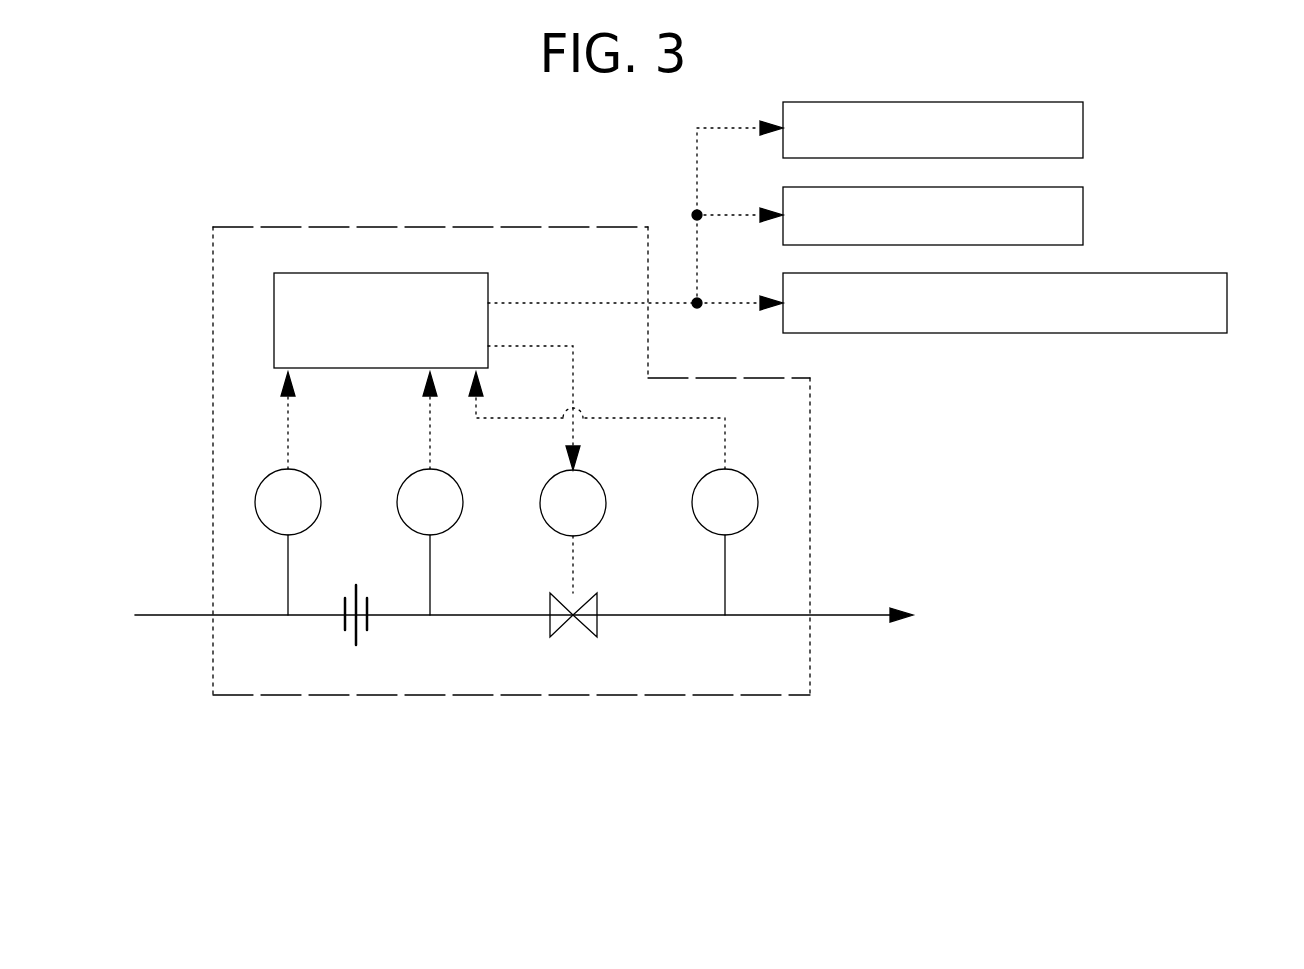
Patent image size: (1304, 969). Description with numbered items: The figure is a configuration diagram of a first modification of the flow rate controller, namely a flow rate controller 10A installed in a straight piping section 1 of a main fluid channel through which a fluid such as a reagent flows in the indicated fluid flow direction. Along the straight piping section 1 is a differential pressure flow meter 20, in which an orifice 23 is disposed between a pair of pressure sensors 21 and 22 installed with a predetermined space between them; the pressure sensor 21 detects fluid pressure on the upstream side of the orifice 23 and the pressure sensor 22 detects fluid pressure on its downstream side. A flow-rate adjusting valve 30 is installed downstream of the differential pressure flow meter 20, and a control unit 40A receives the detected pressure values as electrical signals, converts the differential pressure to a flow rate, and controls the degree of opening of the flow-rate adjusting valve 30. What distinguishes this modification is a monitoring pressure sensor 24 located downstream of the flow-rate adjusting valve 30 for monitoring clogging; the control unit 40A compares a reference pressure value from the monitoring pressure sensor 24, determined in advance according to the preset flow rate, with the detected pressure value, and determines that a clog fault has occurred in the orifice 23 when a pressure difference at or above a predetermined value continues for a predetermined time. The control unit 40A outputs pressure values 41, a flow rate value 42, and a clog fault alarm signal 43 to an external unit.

The straight piping section 1 is at (243, 610).
The flow rate controller 10A is at (540, 697).
The differential pressure flow meter 20 is at (345, 658).
The pressure sensor 21 is at (307, 470).
The pressure sensor 22 is at (403, 522).
The orifice 23 is at (368, 637).
The monitoring pressure sensor 24 is at (745, 468).
The flow-rate adjusting valve 30 is at (597, 597).
The control unit 40A is at (372, 273).
The pressure values 41 is at (1085, 127).
The flow rate value 42 is at (1085, 211).
The clog fault alarm signal 43 is at (1052, 334).